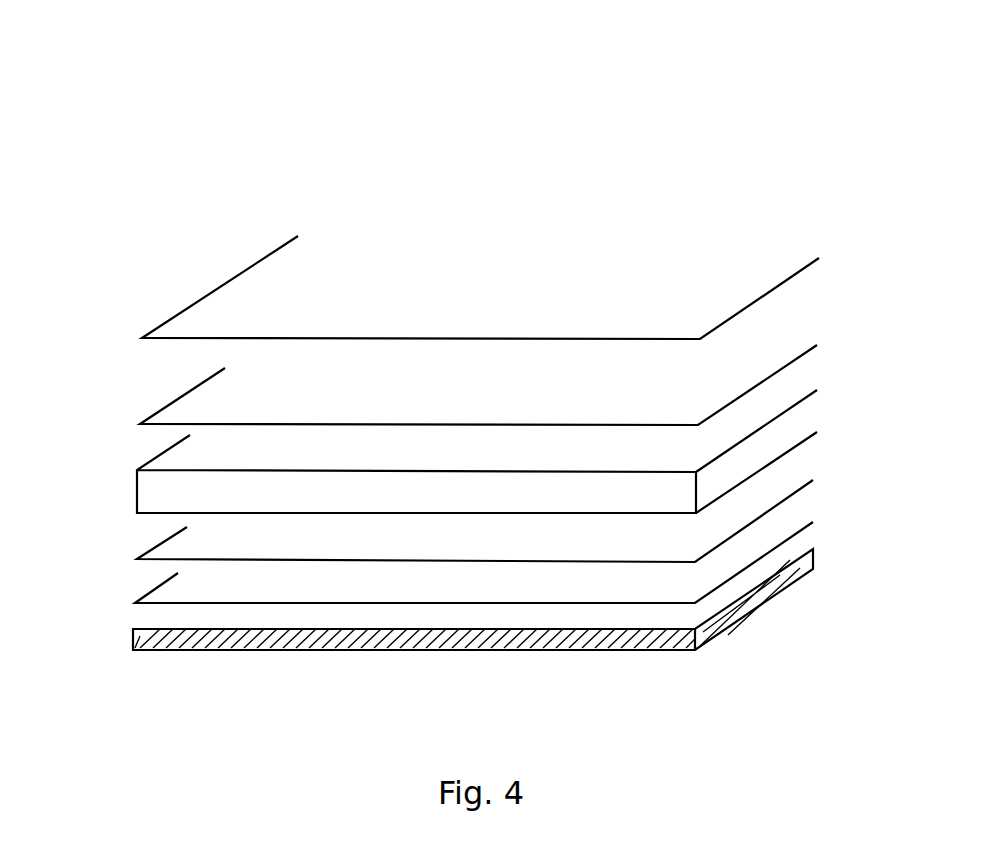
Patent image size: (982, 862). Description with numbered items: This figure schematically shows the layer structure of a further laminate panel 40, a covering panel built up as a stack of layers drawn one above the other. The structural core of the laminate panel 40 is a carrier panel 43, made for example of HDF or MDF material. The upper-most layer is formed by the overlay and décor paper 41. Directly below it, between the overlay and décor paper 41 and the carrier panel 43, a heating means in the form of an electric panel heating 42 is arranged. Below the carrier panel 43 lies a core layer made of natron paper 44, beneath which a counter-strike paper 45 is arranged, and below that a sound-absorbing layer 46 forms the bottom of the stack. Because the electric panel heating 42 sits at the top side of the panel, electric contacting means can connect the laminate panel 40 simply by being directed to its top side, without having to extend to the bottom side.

The laminate panel 40 is at (726, 122).
The overlay and décor paper 41 is at (242, 307).
The electric panel heating 42 is at (198, 406).
The carrier panel 43 is at (153, 495).
The core layer made of natron paper 44 is at (167, 551).
The counter-strike paper 45 is at (168, 590).
The sound-absorbing layer 46 is at (148, 633).